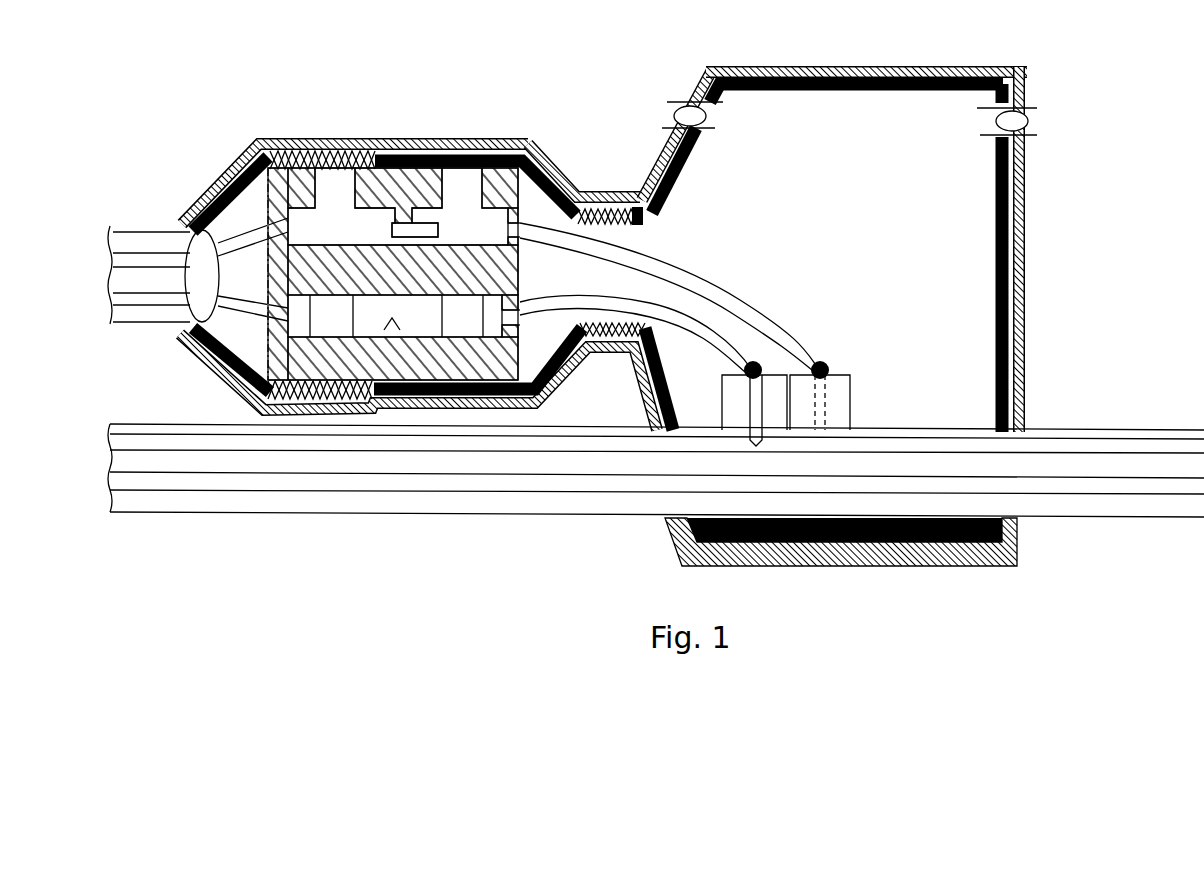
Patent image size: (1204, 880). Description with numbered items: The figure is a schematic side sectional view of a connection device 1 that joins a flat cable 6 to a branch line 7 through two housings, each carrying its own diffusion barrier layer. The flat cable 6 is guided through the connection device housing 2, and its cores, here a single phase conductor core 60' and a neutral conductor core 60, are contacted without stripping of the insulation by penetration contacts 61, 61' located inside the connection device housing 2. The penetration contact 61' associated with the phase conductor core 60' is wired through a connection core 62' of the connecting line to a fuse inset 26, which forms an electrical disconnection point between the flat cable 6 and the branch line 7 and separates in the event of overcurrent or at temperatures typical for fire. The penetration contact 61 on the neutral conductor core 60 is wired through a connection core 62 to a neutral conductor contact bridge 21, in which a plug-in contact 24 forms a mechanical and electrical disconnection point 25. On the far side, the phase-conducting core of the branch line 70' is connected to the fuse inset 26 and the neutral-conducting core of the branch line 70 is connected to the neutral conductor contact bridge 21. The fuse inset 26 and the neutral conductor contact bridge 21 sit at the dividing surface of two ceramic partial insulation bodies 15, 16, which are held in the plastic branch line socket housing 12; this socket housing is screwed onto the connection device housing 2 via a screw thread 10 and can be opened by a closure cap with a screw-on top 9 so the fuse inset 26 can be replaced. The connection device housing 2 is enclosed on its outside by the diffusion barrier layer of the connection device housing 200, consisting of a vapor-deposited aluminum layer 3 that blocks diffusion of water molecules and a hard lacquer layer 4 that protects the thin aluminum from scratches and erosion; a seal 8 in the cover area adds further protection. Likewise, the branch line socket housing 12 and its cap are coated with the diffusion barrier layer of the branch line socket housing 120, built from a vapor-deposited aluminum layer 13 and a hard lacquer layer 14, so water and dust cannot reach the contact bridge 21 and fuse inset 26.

The connection device 1 is at (1095, 72).
The connection device housing 2 is at (762, 72).
The vapor-deposited aluminum layer 3 is at (887, 70).
The hard lacquer layer 4 is at (982, 70).
The flat cable 6 is at (1152, 523).
The branch line 7 is at (160, 230).
The seal 8 is at (1032, 120).
The screw-on top 9 is at (313, 190).
The screw thread 10 is at (616, 205).
The branch line socket housing 12 is at (468, 195).
The vapor-deposited aluminum layer 13 is at (560, 185).
The hard lacquer layer 14 is at (543, 162).
The ceramic partial insulation body 15 is at (292, 197).
The ceramic partial insulation body 16 is at (493, 190).
The neutral conductor contact bridge 21 is at (336, 207).
The plug-in contact 24 is at (412, 228).
The disconnection point 25 is at (392, 337).
The fuse inset 26 is at (425, 325).
The neutral conductor core 60 is at (657, 528).
The phase conductor core 60' is at (657, 419).
The penetration contact 61 is at (835, 377).
The penetration contact 61' is at (783, 366).
The connection core 62 is at (669, 296).
The connection core 62' is at (636, 344).
The neutral-conducting core of the branch line 70 is at (151, 221).
The phase-conducting core of the branch line 70' is at (151, 332).
The diffusion barrier layer of the branch line socket housing 120 is at (530, 150).
The diffusion barrier layer of the connection device housing 200 is at (1023, 324).